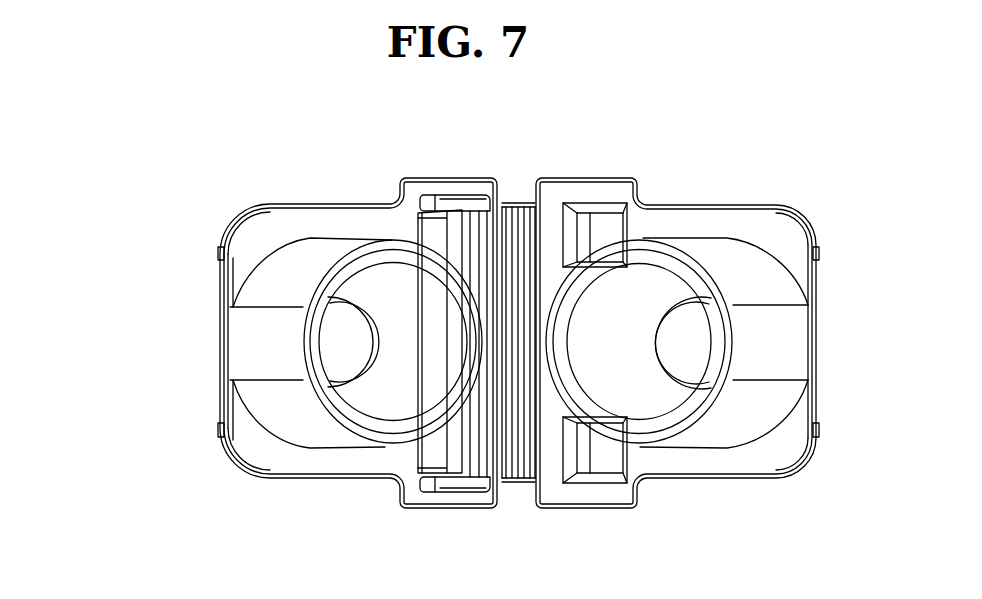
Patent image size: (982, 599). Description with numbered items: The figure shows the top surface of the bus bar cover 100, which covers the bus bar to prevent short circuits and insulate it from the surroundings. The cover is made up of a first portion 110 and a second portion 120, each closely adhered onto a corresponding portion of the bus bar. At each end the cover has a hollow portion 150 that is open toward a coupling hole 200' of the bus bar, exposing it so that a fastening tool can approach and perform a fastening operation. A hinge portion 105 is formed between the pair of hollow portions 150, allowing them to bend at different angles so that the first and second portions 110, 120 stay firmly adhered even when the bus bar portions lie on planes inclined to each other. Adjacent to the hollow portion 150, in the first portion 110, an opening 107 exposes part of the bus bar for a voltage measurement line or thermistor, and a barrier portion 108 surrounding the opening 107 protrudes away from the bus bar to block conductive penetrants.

The bus bar cover 100 is at (158, 349).
The hinge portion 105 is at (518, 480).
The opening 107 is at (433, 233).
The barrier portion 108 is at (458, 200).
The first portion 110 is at (247, 447).
The second portion 120 is at (780, 452).
The hollow portion 150 is at (317, 245).
The coupling hole 200' is at (510, 393).